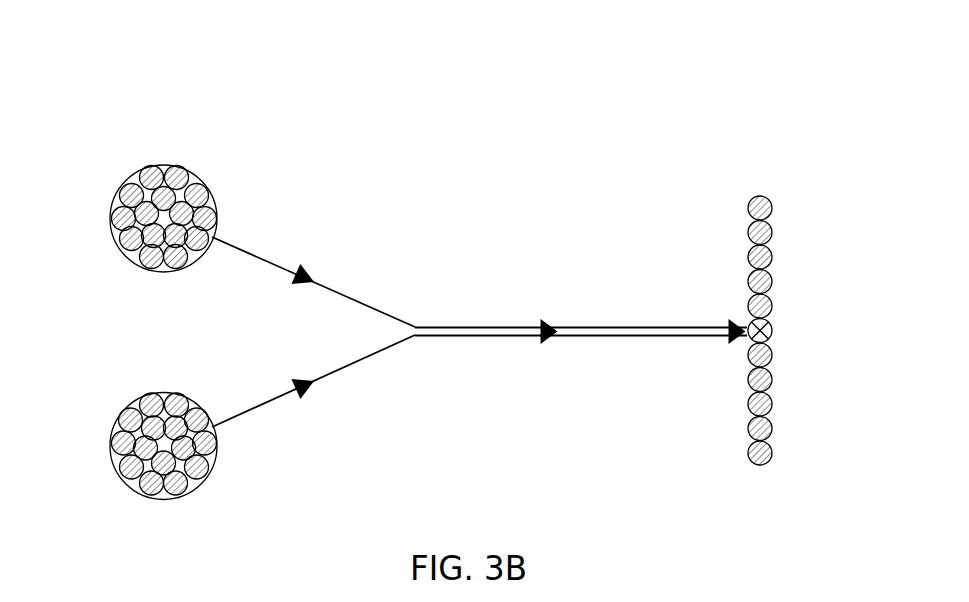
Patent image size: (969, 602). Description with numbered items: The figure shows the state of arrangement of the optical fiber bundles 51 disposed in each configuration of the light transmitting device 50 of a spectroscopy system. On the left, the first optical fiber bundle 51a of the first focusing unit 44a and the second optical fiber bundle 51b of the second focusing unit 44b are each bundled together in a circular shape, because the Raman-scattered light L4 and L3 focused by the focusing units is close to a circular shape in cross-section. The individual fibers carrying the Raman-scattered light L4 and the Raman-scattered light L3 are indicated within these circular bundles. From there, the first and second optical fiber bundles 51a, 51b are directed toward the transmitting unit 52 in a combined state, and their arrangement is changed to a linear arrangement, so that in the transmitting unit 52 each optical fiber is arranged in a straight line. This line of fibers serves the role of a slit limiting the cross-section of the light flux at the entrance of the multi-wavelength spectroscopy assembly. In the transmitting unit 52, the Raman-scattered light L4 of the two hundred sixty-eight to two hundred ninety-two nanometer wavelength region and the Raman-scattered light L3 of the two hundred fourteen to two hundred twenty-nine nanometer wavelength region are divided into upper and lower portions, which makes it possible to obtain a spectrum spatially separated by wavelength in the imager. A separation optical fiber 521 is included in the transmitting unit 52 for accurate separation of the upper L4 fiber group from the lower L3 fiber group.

The light transmitting device 50 is at (692, 103).
The first focusing unit 44a is at (111, 200).
The second focusing unit 44b is at (111, 427).
The first optical fiber bundle 51a is at (271, 257).
The second optical fiber bundle 51b is at (258, 410).
The optical fiber bundles 51 is at (609, 321).
The transmitting unit 52 is at (773, 190).
The separation optical fiber 521 is at (773, 332).
The Raman-scattered light L4 is at (175, 170).
The Raman-scattered light L3 is at (175, 398).